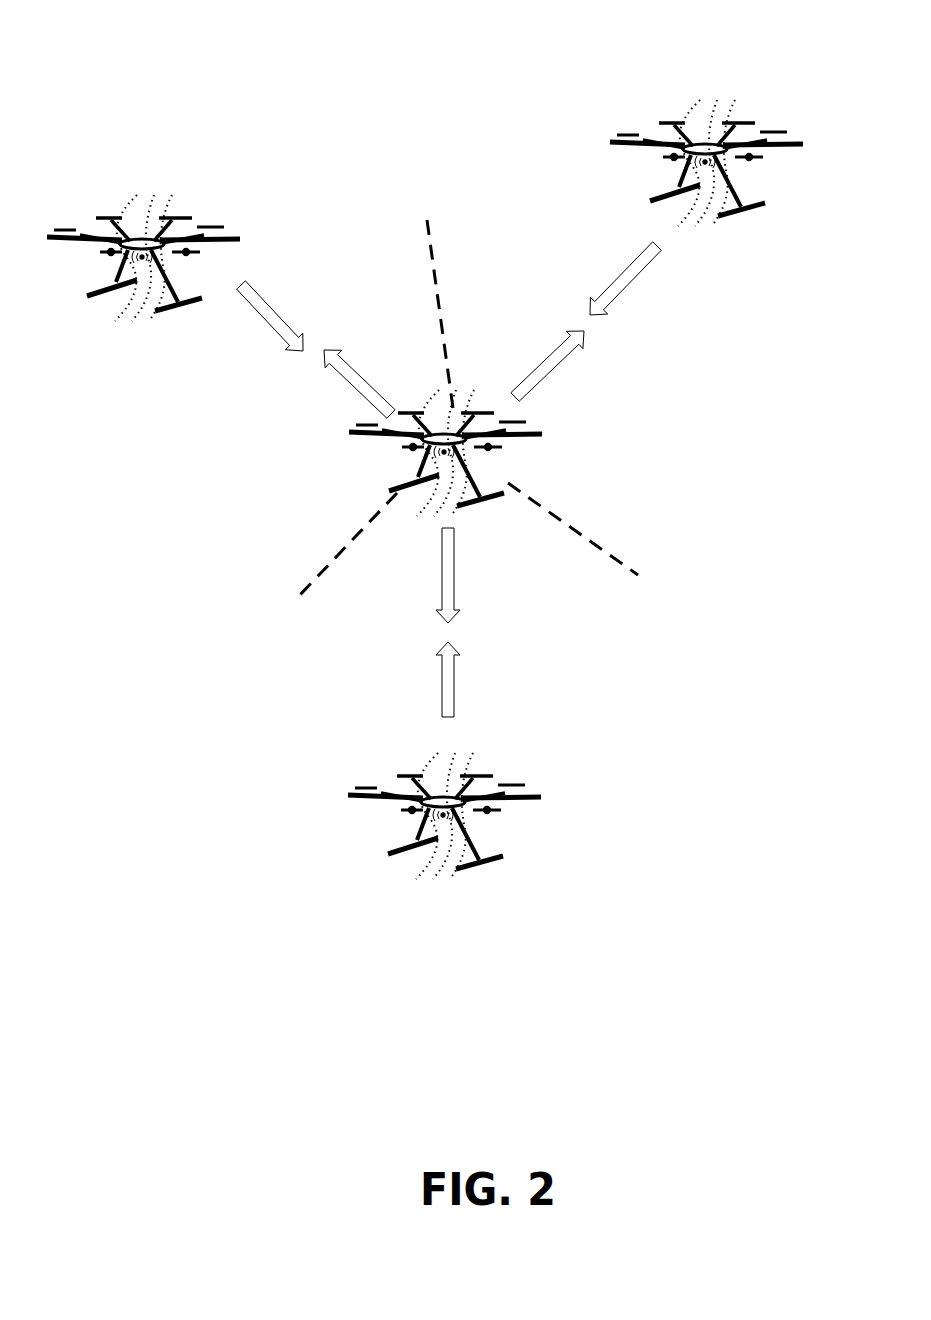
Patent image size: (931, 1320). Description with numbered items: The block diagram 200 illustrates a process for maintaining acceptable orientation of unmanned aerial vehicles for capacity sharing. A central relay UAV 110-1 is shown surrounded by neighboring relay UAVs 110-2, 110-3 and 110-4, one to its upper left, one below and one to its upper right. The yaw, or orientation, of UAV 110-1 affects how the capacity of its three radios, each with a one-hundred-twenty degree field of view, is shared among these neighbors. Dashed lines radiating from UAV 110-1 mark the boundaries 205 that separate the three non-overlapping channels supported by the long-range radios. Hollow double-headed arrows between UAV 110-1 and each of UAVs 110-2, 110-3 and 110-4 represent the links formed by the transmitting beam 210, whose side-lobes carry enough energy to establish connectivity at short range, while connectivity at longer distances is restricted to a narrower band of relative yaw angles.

The block diagram 200 is at (510, 60).
The relay UAV 110-1 is at (471, 453).
The relay UAV 110-2 is at (169, 258).
The relay UAV 110-3 is at (470, 816).
The relay UAV 110-4 is at (732, 163).
The boundaries 205 is at (343, 548).
The transmitting beam 210 is at (278, 326).